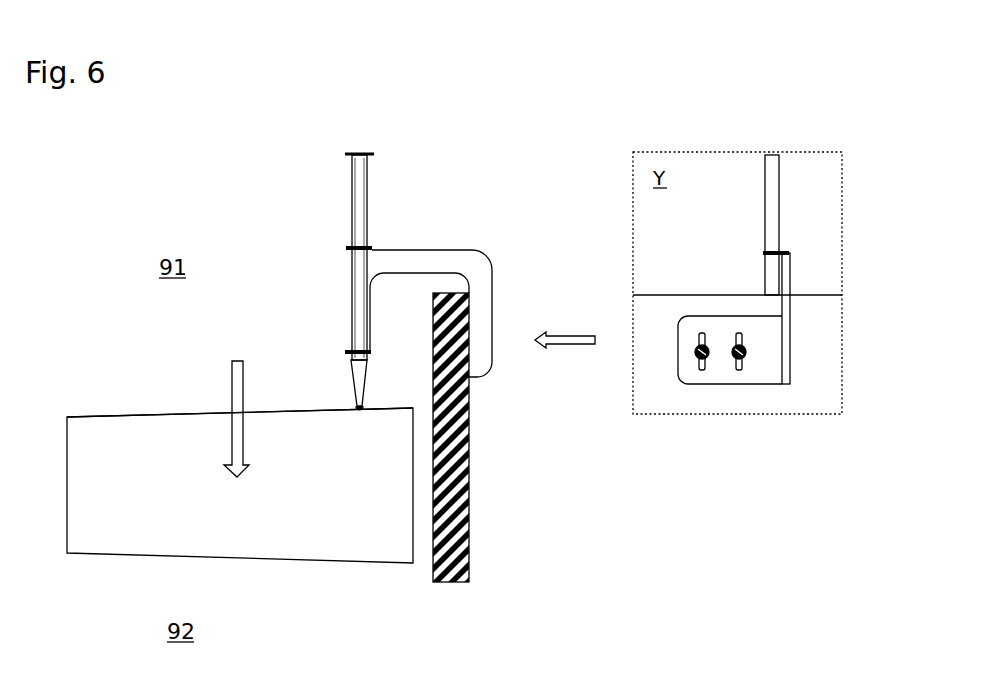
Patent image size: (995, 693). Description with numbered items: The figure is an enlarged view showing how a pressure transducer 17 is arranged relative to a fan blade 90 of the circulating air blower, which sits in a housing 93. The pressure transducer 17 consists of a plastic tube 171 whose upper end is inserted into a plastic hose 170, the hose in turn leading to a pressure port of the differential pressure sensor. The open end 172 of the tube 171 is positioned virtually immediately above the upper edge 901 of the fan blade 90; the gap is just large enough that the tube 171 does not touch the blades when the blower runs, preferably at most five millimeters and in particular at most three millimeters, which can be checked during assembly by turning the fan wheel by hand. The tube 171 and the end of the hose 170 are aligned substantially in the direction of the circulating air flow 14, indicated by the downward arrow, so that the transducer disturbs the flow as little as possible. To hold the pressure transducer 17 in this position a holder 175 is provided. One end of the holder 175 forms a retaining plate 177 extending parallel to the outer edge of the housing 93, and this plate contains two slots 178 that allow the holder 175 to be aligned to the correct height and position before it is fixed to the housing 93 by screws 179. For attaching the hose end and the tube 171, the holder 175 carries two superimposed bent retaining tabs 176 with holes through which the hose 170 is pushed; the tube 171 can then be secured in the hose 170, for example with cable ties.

The first pressure transducer 17 is at (411, 218).
The hose 170 is at (351, 190).
The tube 171 is at (352, 387).
The open end 172 is at (368, 407).
The holder 175 is at (486, 298).
The retaining tabs 176 is at (345, 352).
The retaining plate 177 is at (753, 367).
The slots 178 is at (738, 367).
The screws 179 is at (698, 365).
The fan blade 90 is at (133, 437).
The upper edge 901 is at (172, 412).
The housing 93 is at (469, 490).
The circulating air flow 14 is at (236, 403).